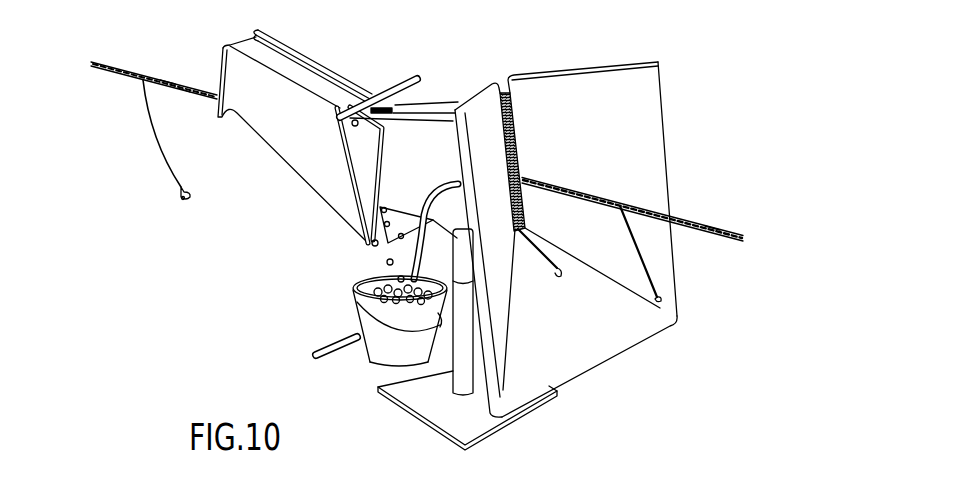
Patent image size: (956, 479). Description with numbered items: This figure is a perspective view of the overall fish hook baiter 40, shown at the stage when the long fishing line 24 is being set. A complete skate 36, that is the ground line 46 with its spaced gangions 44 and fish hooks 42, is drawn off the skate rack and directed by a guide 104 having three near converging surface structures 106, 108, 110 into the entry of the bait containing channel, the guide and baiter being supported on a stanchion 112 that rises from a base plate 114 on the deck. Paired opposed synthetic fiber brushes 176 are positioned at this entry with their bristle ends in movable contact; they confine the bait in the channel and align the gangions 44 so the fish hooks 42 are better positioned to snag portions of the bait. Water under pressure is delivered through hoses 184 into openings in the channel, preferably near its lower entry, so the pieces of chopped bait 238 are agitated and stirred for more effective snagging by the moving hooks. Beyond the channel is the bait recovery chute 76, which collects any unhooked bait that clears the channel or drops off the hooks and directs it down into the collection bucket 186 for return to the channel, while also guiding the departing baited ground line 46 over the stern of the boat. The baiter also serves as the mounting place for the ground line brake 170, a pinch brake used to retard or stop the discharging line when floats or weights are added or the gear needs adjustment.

The long fishing line 24 is at (103, 78).
The skate 36 is at (167, 79).
The ground line 46 is at (184, 94).
The gangions 44 is at (160, 156).
The fish hooks 42 is at (190, 186).
The chopped bait 238 is at (178, 198).
The bait recovery chute 76 is at (307, 56).
The ground line brake 170 is at (395, 79).
The fish hook baiter 40 is at (432, 100).
The near converging surface structure 106 is at (482, 90).
The synthetic fiber brushes 176 is at (505, 82).
The guide 104 is at (583, 66).
The near converging surface structure 108 is at (666, 90).
The near converging surface structure 110 is at (641, 340).
The stanchion 112 is at (406, 402).
The base plate 114 is at (430, 430).
The hoses 184 is at (343, 338).
The collection bucket 186 is at (356, 303).